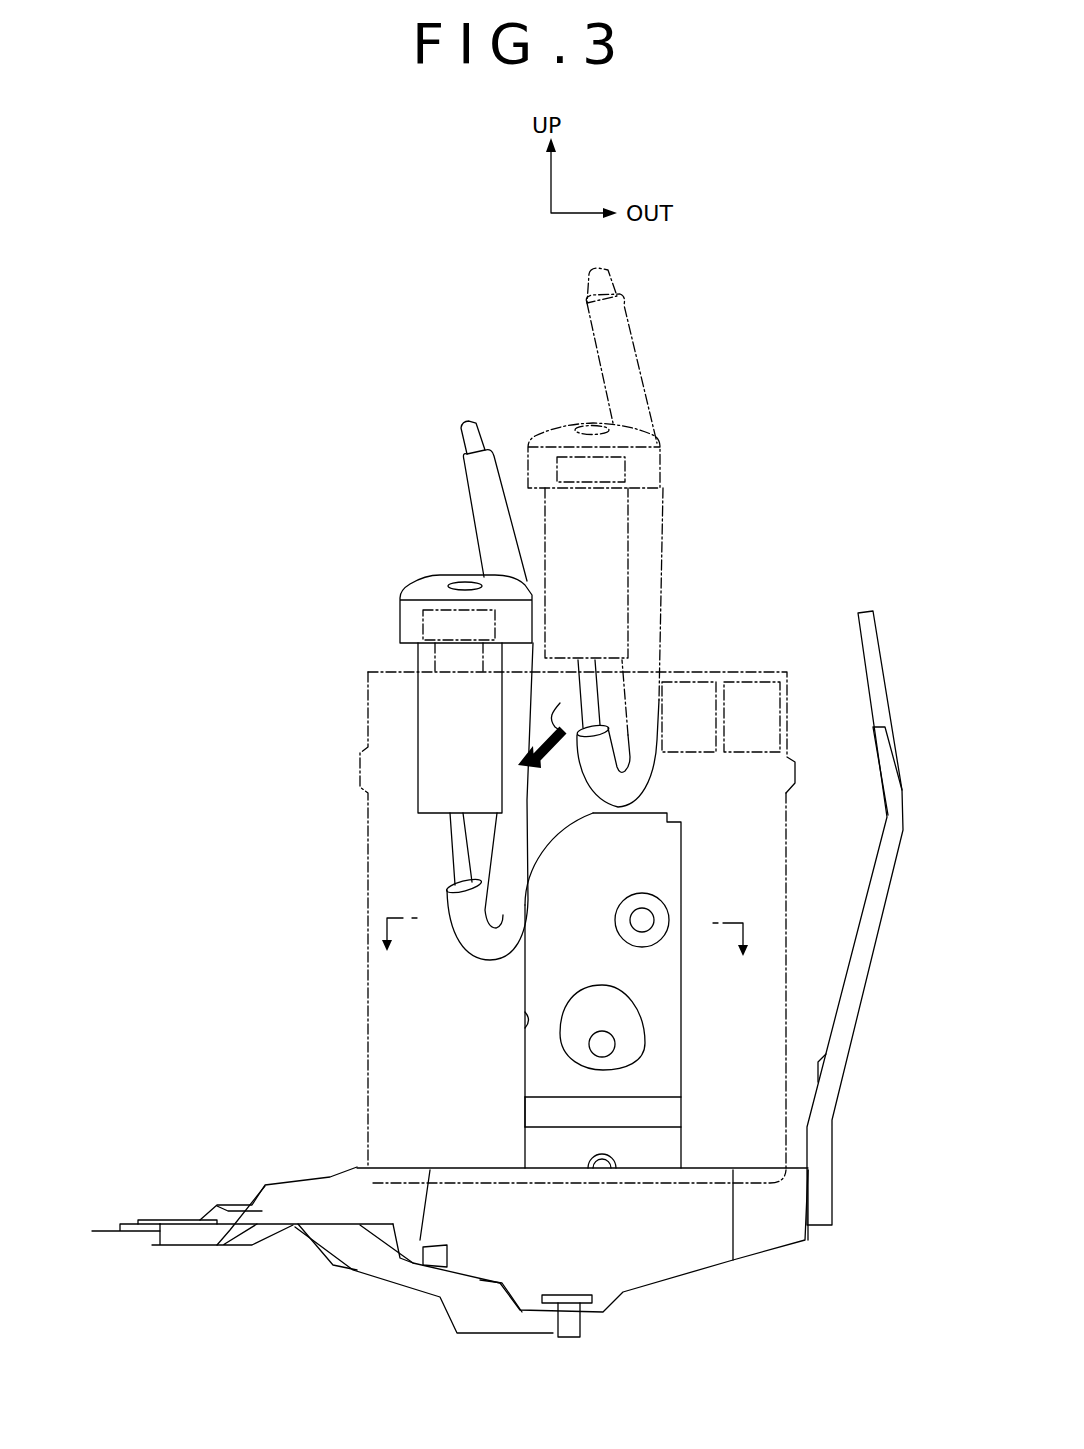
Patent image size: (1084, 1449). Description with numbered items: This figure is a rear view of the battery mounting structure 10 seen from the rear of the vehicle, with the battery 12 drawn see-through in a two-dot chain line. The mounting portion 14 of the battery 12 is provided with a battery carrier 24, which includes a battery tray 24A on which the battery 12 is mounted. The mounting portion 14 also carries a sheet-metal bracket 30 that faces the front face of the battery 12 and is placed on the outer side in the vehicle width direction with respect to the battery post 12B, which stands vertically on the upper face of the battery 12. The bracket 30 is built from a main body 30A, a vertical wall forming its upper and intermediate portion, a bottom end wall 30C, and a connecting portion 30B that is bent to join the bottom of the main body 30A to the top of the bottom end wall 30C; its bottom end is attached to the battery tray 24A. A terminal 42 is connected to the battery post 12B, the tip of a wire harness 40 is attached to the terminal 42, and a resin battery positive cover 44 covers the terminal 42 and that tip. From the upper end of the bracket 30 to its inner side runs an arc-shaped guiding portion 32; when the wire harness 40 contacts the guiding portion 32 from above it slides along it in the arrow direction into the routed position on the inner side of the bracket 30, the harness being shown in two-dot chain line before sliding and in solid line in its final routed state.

The battery unit / assembly 10 is at (753, 344).
The battery 12 is at (806, 759).
The battery post 12B is at (437, 630).
The mounting portion 14 is at (333, 1119).
The battery carrier 24 is at (739, 1162).
The battery tray 24A is at (715, 1168).
The bracket 30 is at (497, 1025).
The main body 30A is at (540, 1077).
The connecting portion 30B is at (540, 1105).
The bottom end wall 30C is at (540, 1138).
The guiding portion 32 is at (550, 842).
The wire harness 40 is at (668, 615).
The terminal 42 is at (623, 468).
The battery positive cover 44 is at (412, 588).